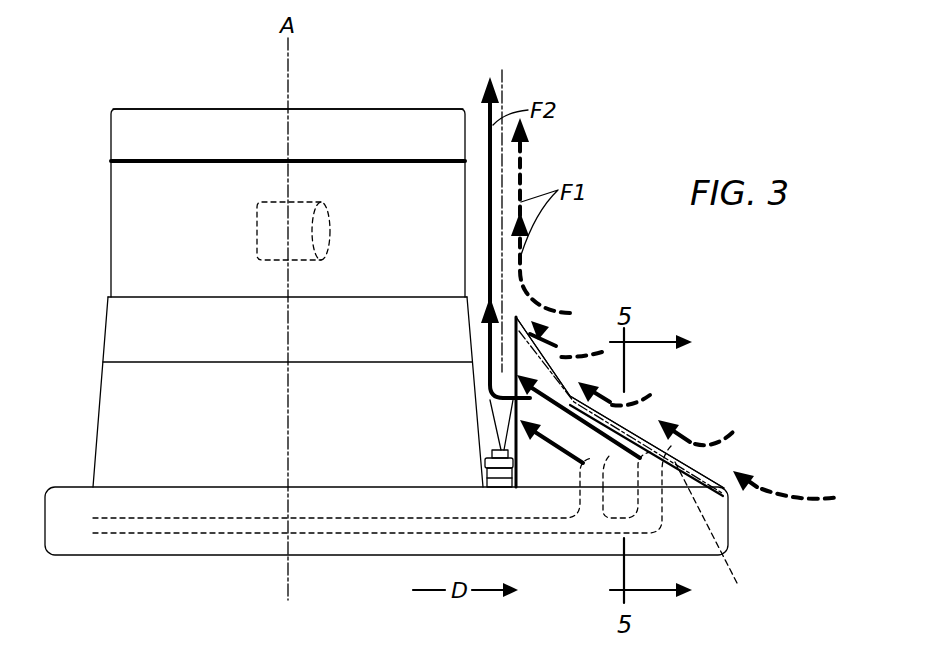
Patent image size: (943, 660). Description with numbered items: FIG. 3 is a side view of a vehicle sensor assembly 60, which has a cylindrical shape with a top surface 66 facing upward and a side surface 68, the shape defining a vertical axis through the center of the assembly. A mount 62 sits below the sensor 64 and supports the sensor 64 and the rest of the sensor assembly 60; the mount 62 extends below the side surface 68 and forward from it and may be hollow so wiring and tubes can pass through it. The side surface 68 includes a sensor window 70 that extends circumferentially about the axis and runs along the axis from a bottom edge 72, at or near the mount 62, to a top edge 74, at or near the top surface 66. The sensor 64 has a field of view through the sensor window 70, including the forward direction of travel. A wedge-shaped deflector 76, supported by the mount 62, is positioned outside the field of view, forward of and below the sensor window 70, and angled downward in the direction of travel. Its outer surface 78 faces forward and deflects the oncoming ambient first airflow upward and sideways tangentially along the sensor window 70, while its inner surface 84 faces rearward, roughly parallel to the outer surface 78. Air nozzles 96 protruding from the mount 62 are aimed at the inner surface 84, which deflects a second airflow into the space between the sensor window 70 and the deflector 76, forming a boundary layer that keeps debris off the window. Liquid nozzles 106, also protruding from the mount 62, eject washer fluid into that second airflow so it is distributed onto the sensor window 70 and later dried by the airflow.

The sensor assembly 60 is at (56, 82).
The mount 62 is at (155, 555).
The sensor 64 is at (330, 222).
The top surface 66 is at (350, 109).
The side surface 68 is at (108, 330).
The sensor window 70 is at (111, 212).
The bottom edge 72 is at (152, 297).
The top edge 74 is at (150, 164).
The deflector 76 is at (553, 368).
The outer surface 78 is at (703, 473).
The inner surface 84 is at (713, 535).
The air nozzles 96 is at (610, 455).
The liquid nozzles 106 is at (493, 453).